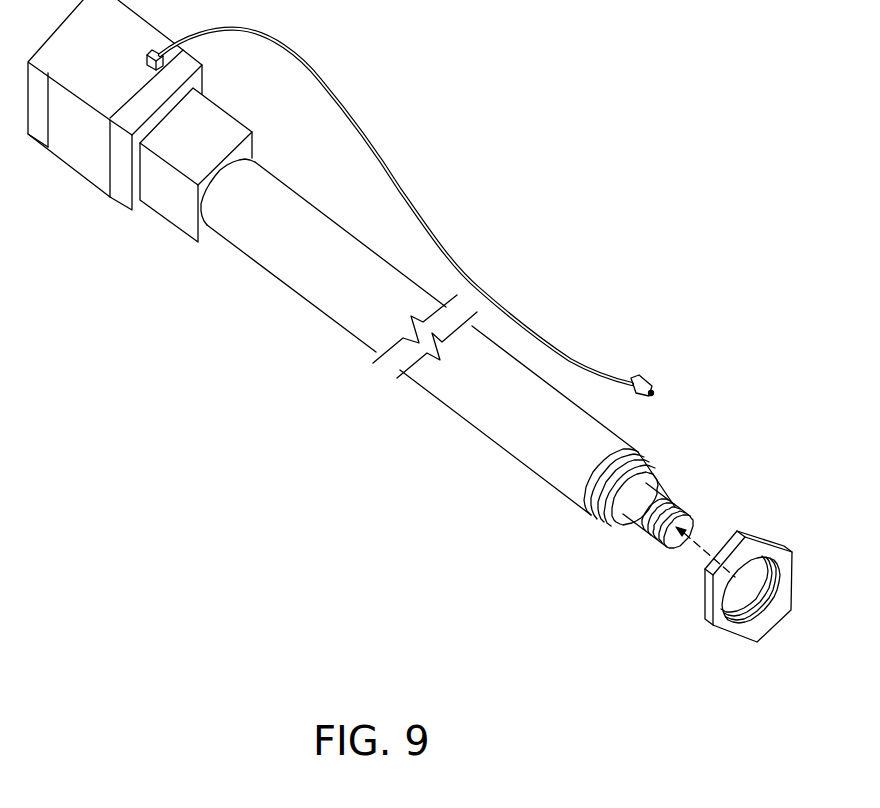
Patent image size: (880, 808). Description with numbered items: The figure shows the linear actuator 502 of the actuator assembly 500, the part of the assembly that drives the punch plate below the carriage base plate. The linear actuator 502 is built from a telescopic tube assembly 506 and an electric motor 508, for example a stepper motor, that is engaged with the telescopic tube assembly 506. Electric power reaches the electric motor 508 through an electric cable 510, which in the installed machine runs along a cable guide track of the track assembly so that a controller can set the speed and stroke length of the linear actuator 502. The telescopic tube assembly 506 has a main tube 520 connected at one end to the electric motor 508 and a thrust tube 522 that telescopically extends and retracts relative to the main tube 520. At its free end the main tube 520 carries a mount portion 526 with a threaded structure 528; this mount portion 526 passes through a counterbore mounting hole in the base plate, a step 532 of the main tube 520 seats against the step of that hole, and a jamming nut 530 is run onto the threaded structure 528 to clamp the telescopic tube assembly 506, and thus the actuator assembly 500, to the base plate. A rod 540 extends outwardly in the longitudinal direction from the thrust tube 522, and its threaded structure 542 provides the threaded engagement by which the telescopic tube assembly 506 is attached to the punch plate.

The actuator assembly 500 is at (568, 117).
The linear actuator 502 is at (352, 311).
The telescopic tube assembly 506 is at (267, 253).
The electric motor 508 is at (123, 192).
The electric cable 510 is at (368, 128).
The main tube 520 is at (482, 390).
The thrust tube 522 is at (631, 520).
The mount portion 526 is at (585, 500).
The threaded structure 528 is at (642, 450).
The jamming nut 530 is at (735, 627).
The step 532 is at (597, 524).
The rod 540 is at (660, 530).
The threaded structure 542 is at (680, 502).